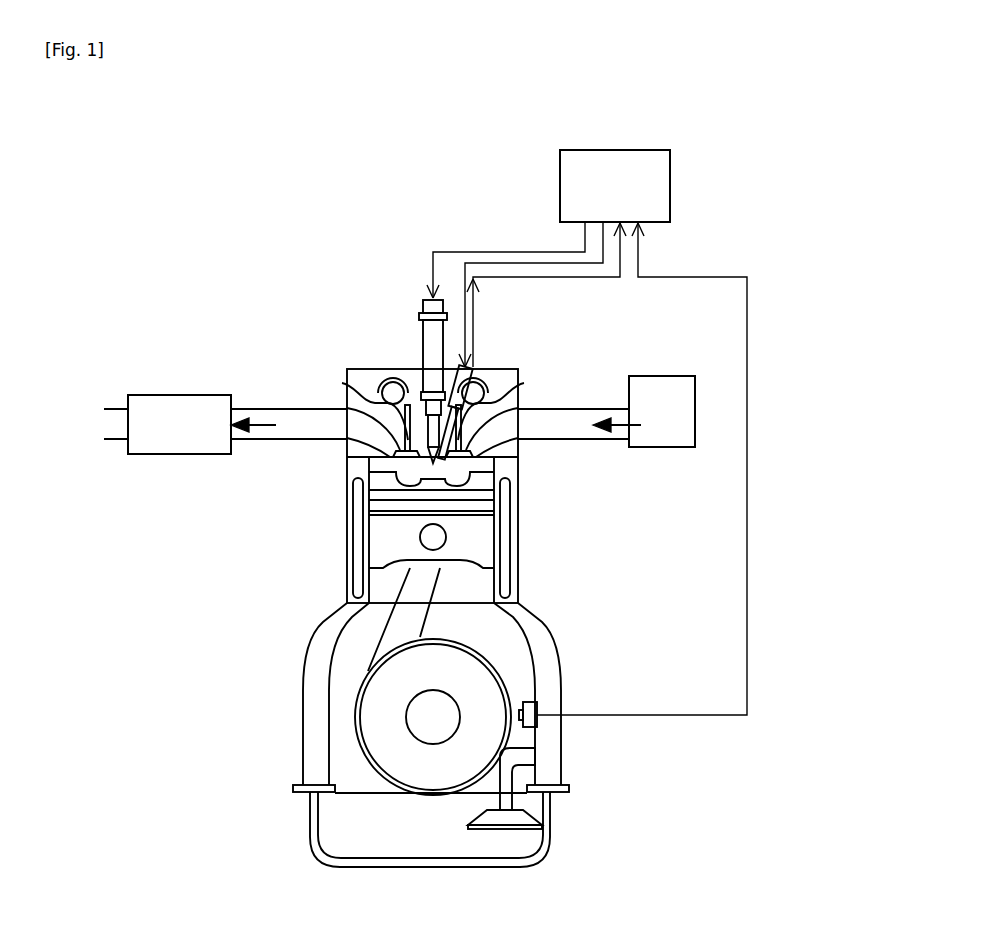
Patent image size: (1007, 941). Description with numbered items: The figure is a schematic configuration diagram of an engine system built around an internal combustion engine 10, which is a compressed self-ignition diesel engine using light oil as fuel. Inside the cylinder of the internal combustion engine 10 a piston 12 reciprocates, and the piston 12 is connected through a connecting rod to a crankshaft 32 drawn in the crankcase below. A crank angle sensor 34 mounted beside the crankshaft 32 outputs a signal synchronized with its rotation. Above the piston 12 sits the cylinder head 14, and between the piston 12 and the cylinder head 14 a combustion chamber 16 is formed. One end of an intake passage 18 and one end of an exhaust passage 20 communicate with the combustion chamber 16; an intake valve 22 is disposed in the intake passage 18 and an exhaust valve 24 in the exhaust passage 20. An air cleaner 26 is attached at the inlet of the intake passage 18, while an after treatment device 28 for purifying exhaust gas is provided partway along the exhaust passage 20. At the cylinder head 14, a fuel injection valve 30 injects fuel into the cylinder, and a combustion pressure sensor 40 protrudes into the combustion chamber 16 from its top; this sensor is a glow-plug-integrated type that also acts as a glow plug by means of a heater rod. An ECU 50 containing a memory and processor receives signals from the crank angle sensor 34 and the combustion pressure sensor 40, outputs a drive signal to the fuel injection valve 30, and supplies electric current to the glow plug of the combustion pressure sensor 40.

The internal combustion engine 10 is at (585, 601).
The piston 12 is at (385, 540).
The cylinder head 14 is at (506, 380).
The combustion chamber 16 is at (385, 473).
The intake passage 18 is at (553, 430).
The exhaust passage 20 is at (295, 433).
The intake valve 22 is at (503, 407).
The exhaust valve 24 is at (344, 383).
The air cleaner 26 is at (663, 447).
The after treatment device 28 is at (160, 395).
The fuel injection valve 30 is at (432, 298).
The crankshaft 32 is at (406, 718).
The crank angle sensor 34 is at (534, 702).
The combustion pressure sensor 40 is at (481, 369).
The ECU 50 is at (612, 150).